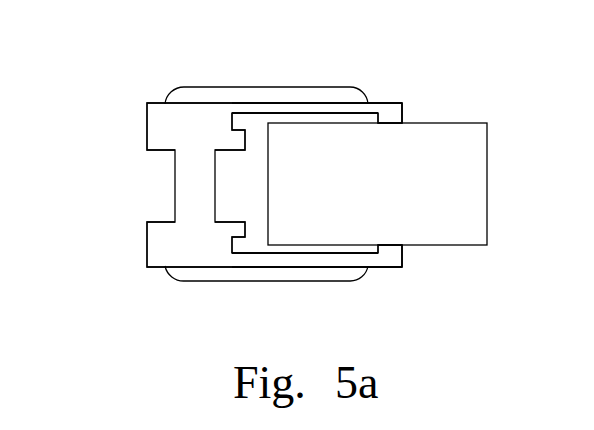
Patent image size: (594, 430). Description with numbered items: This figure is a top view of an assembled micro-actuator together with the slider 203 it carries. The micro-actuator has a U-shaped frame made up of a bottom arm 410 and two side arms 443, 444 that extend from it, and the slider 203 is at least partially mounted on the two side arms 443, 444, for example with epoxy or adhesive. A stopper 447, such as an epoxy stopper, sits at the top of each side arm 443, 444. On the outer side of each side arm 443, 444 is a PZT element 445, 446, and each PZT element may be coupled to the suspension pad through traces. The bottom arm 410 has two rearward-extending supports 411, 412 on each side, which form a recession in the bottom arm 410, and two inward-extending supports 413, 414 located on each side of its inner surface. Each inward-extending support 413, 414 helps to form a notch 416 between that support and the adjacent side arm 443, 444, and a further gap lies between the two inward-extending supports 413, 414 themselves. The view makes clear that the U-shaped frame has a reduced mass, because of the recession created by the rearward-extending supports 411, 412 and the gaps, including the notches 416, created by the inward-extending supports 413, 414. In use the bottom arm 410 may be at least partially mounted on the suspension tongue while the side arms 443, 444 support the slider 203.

The slider 203 is at (465, 190).
The bottom arm 410 is at (190, 185).
The rearward-extending support 411 is at (165, 127).
The rearward-extending support 412 is at (163, 235).
The inward-extending support 413 is at (243, 146).
The inward-extending support 414 is at (247, 230).
The notch 416 is at (240, 123).
The side arm 443 is at (384, 103).
The side arm 444 is at (373, 262).
The PZT element 445 is at (180, 272).
The PZT element 446 is at (185, 91).
The stopper 447 is at (406, 118).